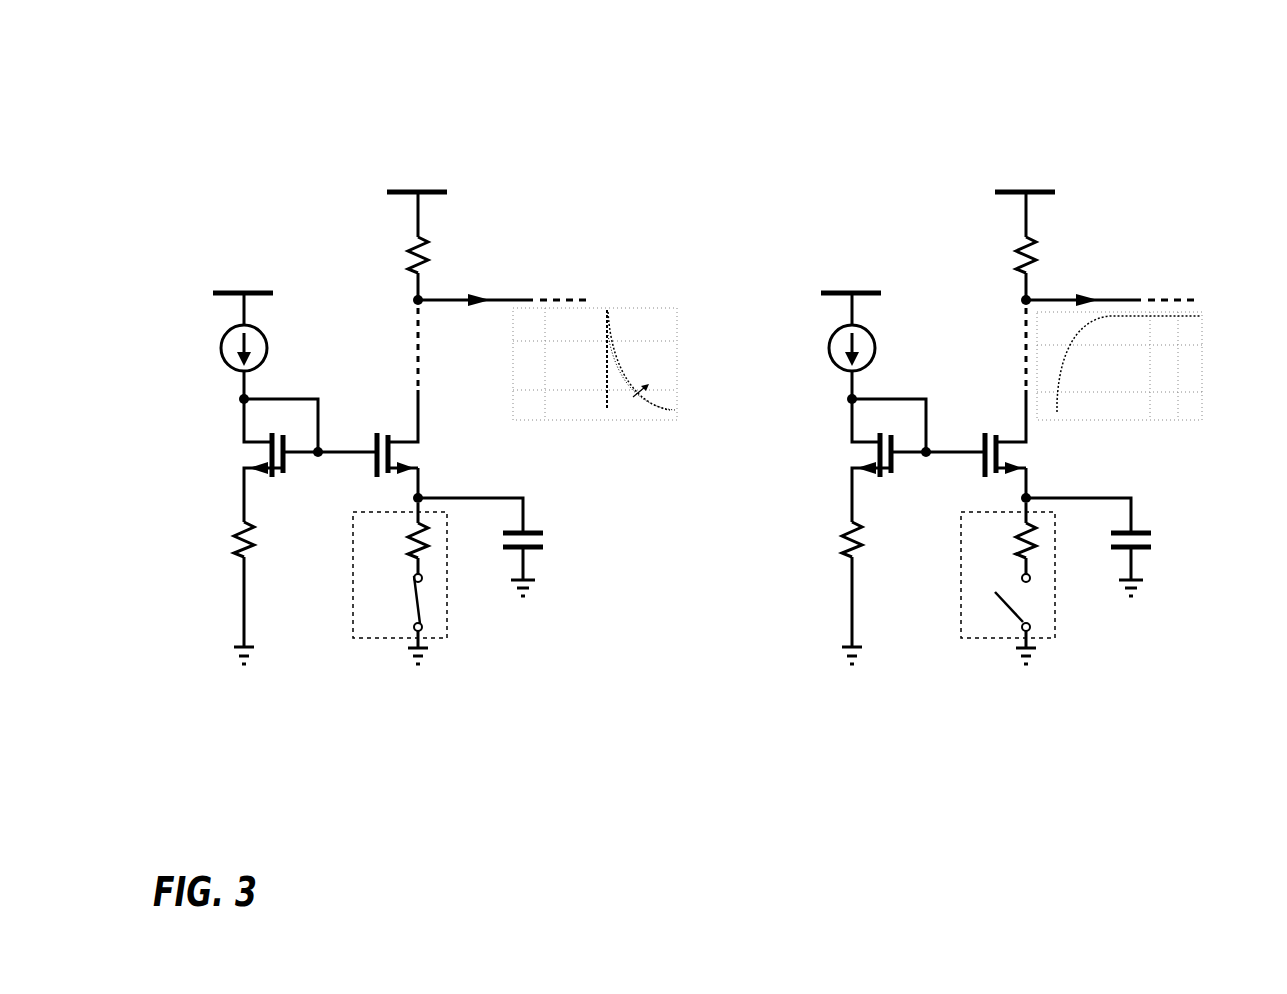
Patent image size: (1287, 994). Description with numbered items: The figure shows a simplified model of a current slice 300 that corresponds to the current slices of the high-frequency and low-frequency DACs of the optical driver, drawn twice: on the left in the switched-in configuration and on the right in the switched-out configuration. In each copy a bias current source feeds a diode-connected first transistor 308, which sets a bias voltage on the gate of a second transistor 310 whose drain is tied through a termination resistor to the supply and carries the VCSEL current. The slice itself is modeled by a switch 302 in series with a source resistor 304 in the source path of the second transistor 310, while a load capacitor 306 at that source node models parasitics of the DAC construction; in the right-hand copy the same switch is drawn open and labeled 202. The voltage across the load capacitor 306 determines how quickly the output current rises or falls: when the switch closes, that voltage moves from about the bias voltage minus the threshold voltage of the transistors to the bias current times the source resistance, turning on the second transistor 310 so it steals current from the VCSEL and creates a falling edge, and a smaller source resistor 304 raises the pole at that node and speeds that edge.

The current slice 300 is at (1065, 62).
The switch 302 is at (420, 605).
The switch (open) 202 is at (1027, 605).
The resistor R_S 304 is at (402, 557).
The capacitor C_L 306 is at (533, 552).
The transistor M1 308 is at (283, 476).
The transistor M2 310 is at (377, 433).